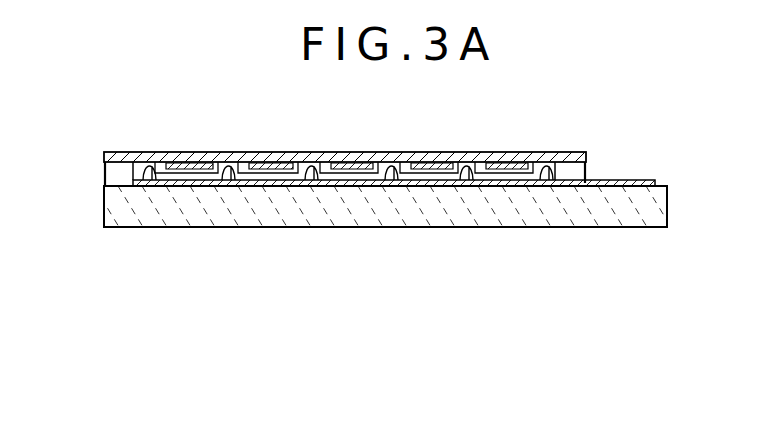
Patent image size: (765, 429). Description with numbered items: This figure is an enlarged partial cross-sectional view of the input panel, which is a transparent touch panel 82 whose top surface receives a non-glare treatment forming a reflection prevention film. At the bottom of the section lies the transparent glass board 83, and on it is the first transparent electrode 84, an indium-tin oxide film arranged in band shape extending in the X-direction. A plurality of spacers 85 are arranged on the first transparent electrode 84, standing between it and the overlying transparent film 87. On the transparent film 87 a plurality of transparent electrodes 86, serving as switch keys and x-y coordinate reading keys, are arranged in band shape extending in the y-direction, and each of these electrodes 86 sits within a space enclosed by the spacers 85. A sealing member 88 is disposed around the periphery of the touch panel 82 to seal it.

The touch panel 82 is at (94, 189).
The transparent glass board 83 is at (224, 212).
The first transparent electrode 84 is at (368, 184).
The spacer 85 is at (397, 158).
The transparent electrode 86 is at (192, 157).
The transparent film 87 is at (305, 154).
The sealing member 88 is at (123, 184).